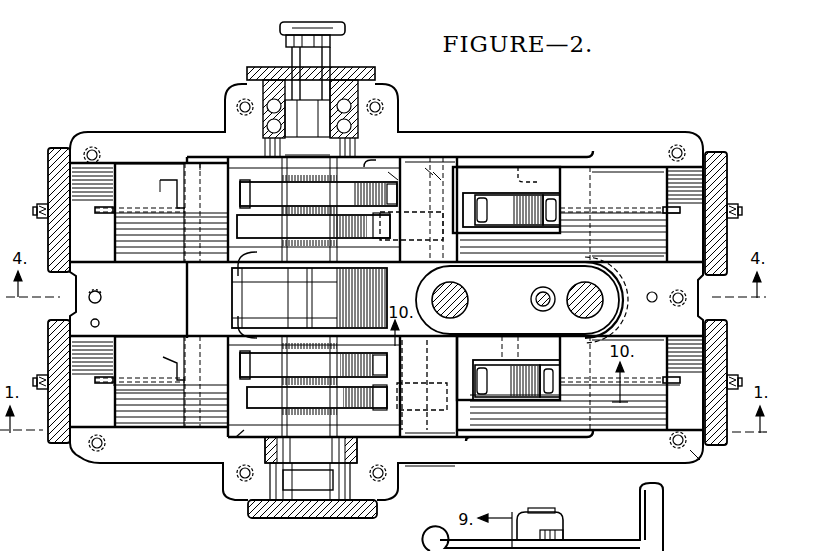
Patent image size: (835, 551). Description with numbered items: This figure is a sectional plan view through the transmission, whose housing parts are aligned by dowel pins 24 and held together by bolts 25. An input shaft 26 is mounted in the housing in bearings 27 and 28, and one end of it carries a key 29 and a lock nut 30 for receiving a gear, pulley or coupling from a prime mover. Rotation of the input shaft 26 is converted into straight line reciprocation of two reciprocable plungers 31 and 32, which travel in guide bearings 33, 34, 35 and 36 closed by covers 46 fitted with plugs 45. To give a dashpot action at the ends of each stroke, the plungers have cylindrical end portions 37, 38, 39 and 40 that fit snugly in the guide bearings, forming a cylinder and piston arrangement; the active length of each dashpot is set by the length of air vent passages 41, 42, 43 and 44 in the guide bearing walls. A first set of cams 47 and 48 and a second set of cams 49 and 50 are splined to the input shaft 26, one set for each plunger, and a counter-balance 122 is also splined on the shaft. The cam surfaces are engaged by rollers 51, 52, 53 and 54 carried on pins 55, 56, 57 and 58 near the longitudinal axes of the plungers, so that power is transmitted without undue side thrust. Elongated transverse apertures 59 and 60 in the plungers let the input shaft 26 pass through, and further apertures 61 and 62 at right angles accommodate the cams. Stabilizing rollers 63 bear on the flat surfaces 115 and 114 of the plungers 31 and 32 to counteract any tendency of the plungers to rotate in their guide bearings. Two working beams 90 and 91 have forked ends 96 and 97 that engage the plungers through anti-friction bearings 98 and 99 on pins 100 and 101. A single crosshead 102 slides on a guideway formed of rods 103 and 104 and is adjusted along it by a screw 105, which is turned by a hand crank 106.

The dowel pin 24 is at (99, 322).
The bolt 25 is at (101, 294).
The input shaft 26 is at (303, 66).
The bearing 27 is at (347, 108).
The bearing 28 is at (357, 452).
The key 29 is at (289, 42).
The lock nut 30 is at (343, 28).
The reciprocable plunger 31 is at (455, 153).
The reciprocable plunger 32 is at (418, 418).
The guide bearing 33 is at (97, 183).
The guide bearing 34 is at (110, 420).
The guide bearing 35 is at (713, 449).
The guide bearing 36 is at (688, 193).
The cylindrical end portion 37 is at (135, 188).
The cylindrical end portion 38 is at (150, 403).
The cylindrical end portion 39 is at (632, 405).
The cylindrical end portion 40 is at (633, 183).
The air vent passage 41 is at (100, 215).
The air vent passage 42 is at (100, 385).
The air vent passage 43 is at (672, 386).
The air vent passage 44 is at (675, 215).
The plug 45 is at (38, 210).
The cover 46 is at (48, 153).
The cam 47 is at (318, 194).
The cam 48 is at (313, 225).
The cam 49 is at (313, 365).
The cam 50 is at (317, 397).
The roller 51 is at (165, 188).
The roller 52 is at (450, 233).
The roller 53 is at (163, 357).
The roller 54 is at (449, 405).
The pin 55 is at (207, 163).
The pin 56 is at (430, 166).
The pin 57 is at (196, 432).
The pin 58 is at (438, 360).
The elongated transverse aperture 59 is at (244, 282).
The elongated transverse aperture 60 is at (244, 325).
The elongated aperture 61 is at (394, 177).
The elongated aperture 62 is at (248, 509).
The stabilizing roller 63 is at (455, 529).
The working beam 90 is at (549, 208).
The working beam 91 is at (548, 386).
The fork 96 is at (506, 200).
The fork 97 is at (508, 368).
The anti-friction bearing 98 is at (488, 208).
The anti-friction bearing 99 is at (495, 388).
The pin 100 is at (531, 173).
The pin 101 is at (527, 402).
The crosshead 102 is at (517, 300).
The rod 103 is at (434, 295).
The rod 104 is at (594, 299).
The screw 105 is at (535, 292).
The hand crank 106 is at (663, 520).
The flat surface 114 is at (413, 440).
The flat surface 115 is at (438, 173).
The counter-balance 122 is at (309, 298).